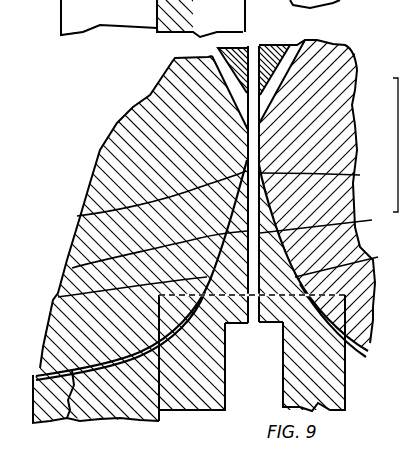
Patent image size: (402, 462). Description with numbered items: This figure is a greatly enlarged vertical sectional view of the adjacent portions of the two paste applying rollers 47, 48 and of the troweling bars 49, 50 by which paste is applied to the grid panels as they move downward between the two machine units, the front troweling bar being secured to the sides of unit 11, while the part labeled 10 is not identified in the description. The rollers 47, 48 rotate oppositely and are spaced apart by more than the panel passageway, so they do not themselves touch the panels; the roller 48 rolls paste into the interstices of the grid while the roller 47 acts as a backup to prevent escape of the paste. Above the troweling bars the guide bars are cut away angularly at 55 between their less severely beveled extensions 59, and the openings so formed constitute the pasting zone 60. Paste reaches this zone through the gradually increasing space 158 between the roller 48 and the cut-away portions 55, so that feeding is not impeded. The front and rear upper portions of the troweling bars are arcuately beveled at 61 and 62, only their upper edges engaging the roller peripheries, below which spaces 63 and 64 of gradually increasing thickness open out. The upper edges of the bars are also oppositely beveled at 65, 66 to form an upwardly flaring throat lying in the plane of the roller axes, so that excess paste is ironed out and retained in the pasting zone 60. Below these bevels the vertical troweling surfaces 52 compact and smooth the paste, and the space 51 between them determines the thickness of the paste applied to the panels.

The upper assembly 10 is at (200, 18).
The unit 11 is at (80, 40).
The paste applying roller 47 is at (96, 165).
The paste applying roller 48 is at (272, 110).
The troweling bar 49 is at (182, 414).
The troweling bar 50 is at (338, 400).
The space 51 is at (253, 280).
The troweling surfaces 52 is at (72, 268).
The cut-away portion 55 is at (250, 47).
The extension 59 is at (398, 149).
The pasting zone 60 is at (357, 55).
The arcuate bevel 61 is at (58, 297).
The arcuate bevel 62 is at (345, 264).
The space 63 is at (68, 417).
The space 64 is at (210, 270).
The beveled upper edge 65 is at (77, 216).
The beveled upper edge 66 is at (319, 176).
The space 158 is at (303, 44).